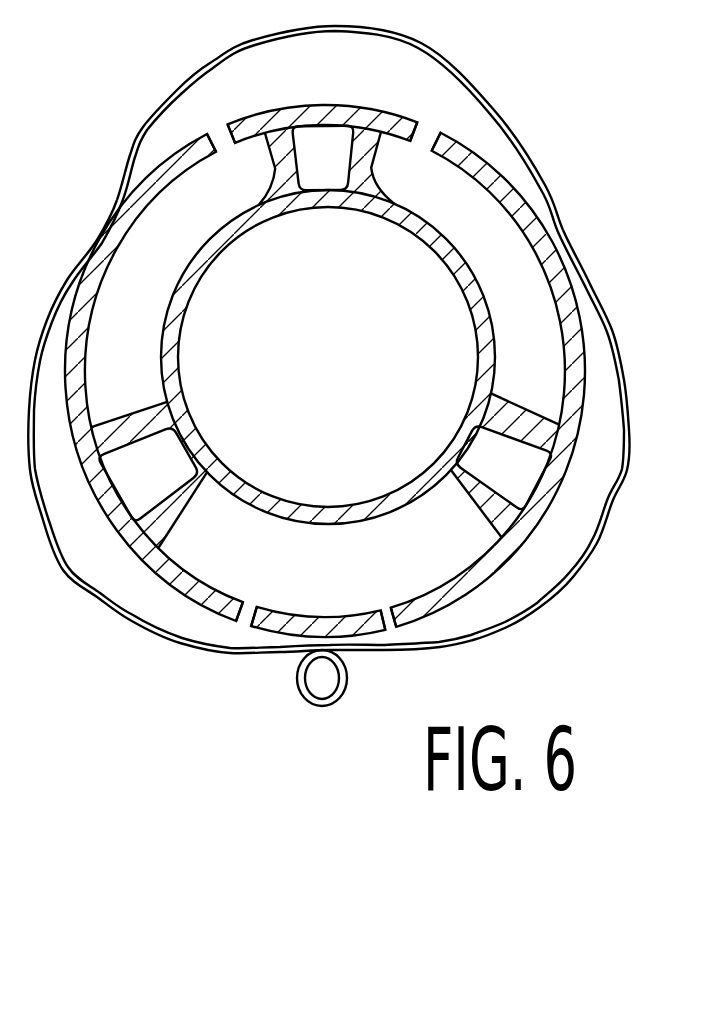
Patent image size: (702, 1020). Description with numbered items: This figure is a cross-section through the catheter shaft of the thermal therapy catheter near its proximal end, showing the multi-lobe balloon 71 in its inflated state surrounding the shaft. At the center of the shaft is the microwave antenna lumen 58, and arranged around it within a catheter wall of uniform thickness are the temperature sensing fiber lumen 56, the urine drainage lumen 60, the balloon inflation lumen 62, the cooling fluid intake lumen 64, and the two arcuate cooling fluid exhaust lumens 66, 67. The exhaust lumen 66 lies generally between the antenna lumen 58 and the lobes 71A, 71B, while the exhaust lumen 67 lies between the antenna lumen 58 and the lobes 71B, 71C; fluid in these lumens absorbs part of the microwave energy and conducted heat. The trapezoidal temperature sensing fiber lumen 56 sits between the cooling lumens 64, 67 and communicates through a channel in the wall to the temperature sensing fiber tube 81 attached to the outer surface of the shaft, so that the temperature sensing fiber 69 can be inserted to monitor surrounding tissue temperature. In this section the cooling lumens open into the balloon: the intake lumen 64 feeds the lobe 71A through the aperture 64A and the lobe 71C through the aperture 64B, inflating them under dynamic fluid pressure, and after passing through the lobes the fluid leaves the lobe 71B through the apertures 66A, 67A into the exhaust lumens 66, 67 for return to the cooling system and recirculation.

The temperature sensing fiber lumen 56 is at (516, 483).
The microwave antenna lumen 58 is at (335, 413).
The urine drainage lumen 60 is at (153, 477).
The balloon inflation lumen 62 is at (338, 165).
The cooling fluid intake lumen 64 is at (345, 580).
The aperture 64A is at (249, 615).
The aperture 64B is at (393, 625).
The cooling fluid exhaust lumen 66 is at (142, 317).
The aperture 66A is at (214, 140).
The cooling fluid exhaust lumen 67 is at (532, 340).
The aperture 67A is at (437, 140).
The temperature sensing fiber 69 is at (312, 680).
The multi-lobe balloon 71 is at (629, 469).
The lobe 71A is at (63, 568).
The lobe 71B is at (421, 43).
The lobe 71C is at (609, 513).
The temperature sensing fiber tube 81 is at (343, 690).